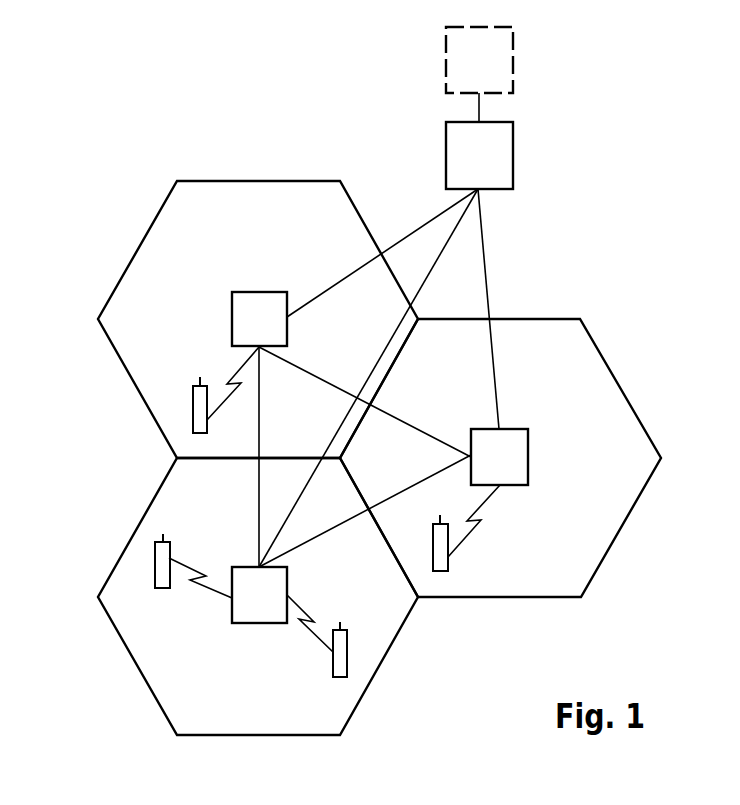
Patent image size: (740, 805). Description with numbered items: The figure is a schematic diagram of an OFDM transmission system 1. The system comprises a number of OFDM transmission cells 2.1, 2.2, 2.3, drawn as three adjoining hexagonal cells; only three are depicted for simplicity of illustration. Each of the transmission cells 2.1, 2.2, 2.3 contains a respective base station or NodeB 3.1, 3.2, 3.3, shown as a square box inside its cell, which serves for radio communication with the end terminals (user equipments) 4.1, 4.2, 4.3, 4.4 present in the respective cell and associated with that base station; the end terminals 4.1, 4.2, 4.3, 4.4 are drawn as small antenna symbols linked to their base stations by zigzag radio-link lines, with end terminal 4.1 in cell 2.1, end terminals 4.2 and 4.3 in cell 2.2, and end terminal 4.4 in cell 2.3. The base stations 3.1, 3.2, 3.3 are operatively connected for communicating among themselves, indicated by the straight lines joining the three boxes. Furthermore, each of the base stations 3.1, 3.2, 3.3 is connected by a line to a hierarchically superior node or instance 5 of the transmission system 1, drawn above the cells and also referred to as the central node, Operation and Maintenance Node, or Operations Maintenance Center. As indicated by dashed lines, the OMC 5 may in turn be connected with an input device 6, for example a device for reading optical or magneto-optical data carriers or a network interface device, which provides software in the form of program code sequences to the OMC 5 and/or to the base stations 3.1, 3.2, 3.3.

The OFDM transmission system 1 is at (156, 137).
The OFDM transmission cell 2.1 is at (138, 247).
The OFDM transmission cell 2.2 is at (140, 667).
The OFDM transmission cell 2.3 is at (623, 383).
The base station 3.1 is at (259, 292).
The base station 3.2 is at (262, 623).
The base station 3.3 is at (528, 458).
The end terminal 4.1 is at (193, 412).
The end terminal 4.2 is at (155, 573).
The end terminal 4.3 is at (347, 668).
The end terminal 4.4 is at (440, 571).
The hierarchically superior node 5 is at (513, 155).
The input device 6 is at (513, 62).